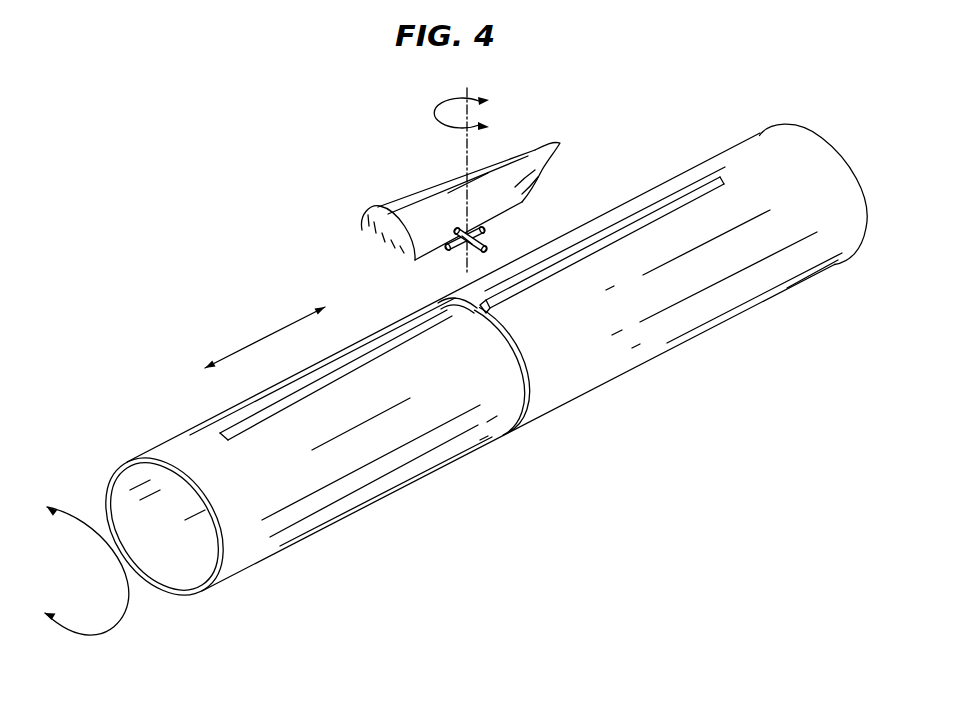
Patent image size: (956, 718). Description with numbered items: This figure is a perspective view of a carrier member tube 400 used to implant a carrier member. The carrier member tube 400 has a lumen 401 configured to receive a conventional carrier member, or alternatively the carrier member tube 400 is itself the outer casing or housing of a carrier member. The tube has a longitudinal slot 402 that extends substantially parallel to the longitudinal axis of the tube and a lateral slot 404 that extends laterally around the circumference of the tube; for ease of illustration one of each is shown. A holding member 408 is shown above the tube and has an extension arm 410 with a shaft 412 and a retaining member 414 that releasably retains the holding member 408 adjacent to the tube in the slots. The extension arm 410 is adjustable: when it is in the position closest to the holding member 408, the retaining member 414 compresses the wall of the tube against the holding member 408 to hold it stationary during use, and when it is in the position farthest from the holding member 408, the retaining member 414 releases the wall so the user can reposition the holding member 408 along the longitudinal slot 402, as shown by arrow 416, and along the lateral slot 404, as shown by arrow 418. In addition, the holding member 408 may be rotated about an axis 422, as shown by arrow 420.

The carrier member tube 400 is at (459, 362).
The lumen 401 is at (140, 489).
The longitudinal slot 402 is at (688, 176).
The lateral slot 404 is at (528, 358).
The holding member 408 is at (420, 186).
The extension arm 410 is at (473, 244).
The shaft 412 is at (489, 230).
The retaining member 414 is at (461, 248).
The arrow 416 is at (253, 342).
The arrow 418 is at (129, 612).
The arrow 420 is at (447, 111).
The axis 422 is at (470, 144).